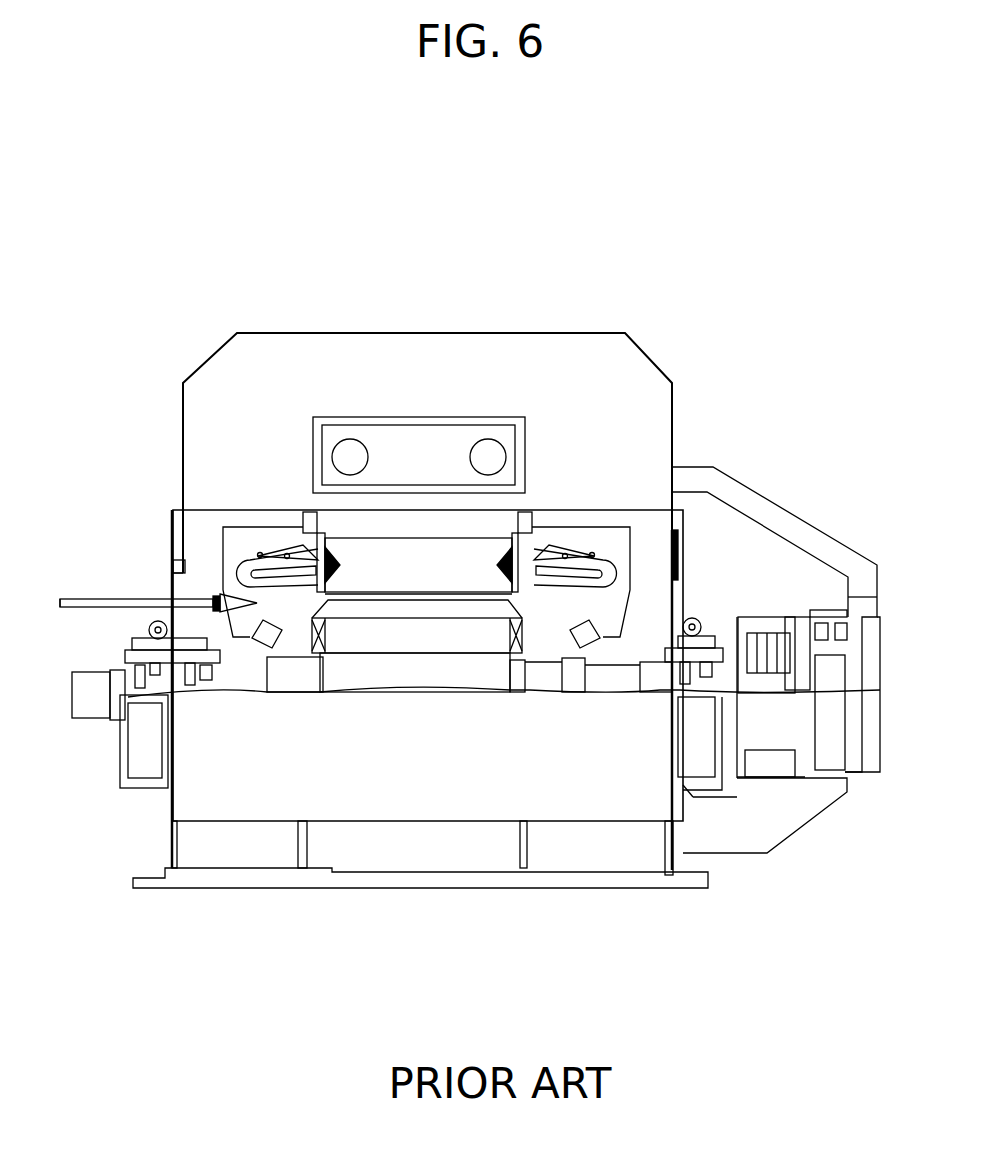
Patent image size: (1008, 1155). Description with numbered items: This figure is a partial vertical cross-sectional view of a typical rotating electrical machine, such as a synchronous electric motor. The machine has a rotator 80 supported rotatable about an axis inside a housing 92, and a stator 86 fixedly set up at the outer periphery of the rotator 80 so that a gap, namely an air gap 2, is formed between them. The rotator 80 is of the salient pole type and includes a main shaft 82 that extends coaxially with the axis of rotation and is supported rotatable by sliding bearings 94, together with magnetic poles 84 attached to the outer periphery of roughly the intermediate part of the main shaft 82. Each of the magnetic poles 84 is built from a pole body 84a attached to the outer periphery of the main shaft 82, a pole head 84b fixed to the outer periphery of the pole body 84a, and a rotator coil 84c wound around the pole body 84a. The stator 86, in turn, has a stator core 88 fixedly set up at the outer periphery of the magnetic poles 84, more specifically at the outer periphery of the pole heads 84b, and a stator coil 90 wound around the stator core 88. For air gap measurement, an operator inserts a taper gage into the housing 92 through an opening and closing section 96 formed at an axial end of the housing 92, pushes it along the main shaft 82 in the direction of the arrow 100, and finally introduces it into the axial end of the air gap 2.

The gap (air gap) 2 is at (325, 595).
The rotator 80 is at (303, 680).
The main shaft 82 is at (87, 707).
The magnetic poles 84 is at (424, 657).
The pole body 84a is at (373, 643).
The pole head 84b is at (465, 608).
The rotator coil 84c is at (522, 665).
The stator 86 is at (446, 531).
The stator core 88 is at (385, 553).
The stator coil 90 is at (248, 567).
The housing 92 is at (148, 515).
The sliding bearings 94 is at (173, 663).
The opening and closing section 96 is at (167, 590).
The arrow 100 is at (73, 615).